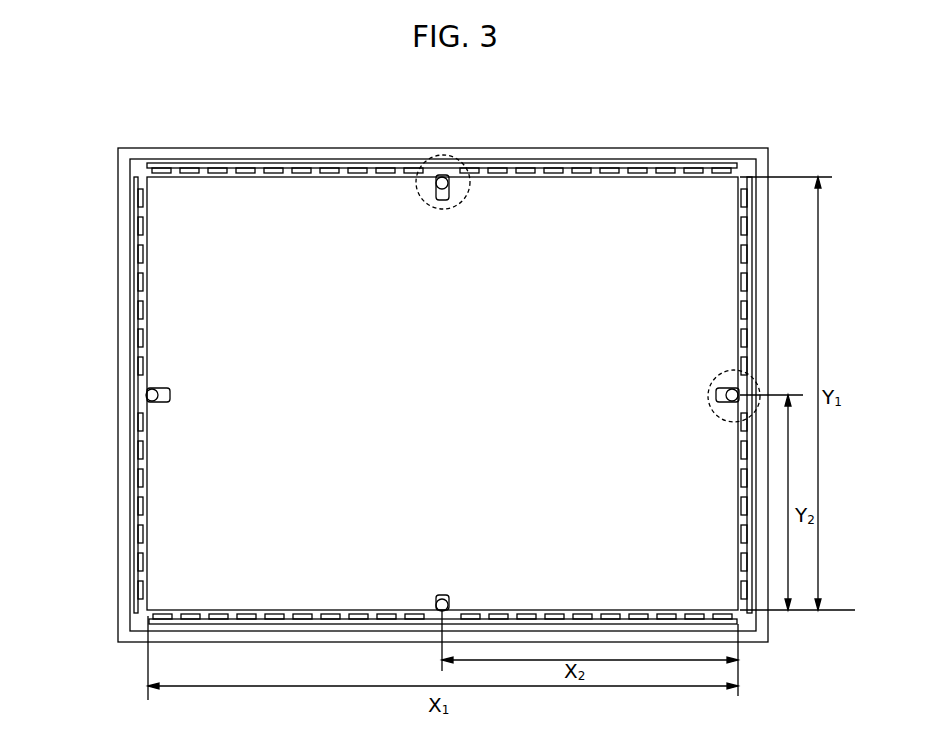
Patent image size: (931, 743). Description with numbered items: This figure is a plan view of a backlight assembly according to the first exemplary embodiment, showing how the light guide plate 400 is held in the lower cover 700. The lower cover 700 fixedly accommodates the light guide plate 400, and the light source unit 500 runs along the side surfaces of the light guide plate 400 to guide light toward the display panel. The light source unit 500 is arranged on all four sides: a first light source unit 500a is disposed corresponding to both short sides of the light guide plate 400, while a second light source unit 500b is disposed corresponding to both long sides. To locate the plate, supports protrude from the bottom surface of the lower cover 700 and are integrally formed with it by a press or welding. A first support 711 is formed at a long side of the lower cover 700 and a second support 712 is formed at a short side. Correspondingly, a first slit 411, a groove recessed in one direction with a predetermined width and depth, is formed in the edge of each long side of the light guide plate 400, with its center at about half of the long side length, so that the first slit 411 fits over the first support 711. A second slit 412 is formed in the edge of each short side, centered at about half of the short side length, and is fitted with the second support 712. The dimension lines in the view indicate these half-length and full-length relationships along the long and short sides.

The light guide plate 400 is at (378, 190).
The first slit 411 is at (449, 190).
The second slit 412 is at (164, 392).
The light source unit 500 is at (133, 240).
The first light source unit 500a is at (747, 195).
The second light source unit 500b is at (568, 160).
The lower cover 700 is at (121, 303).
The first support 711 is at (441, 178).
The second support 712 is at (159, 404).